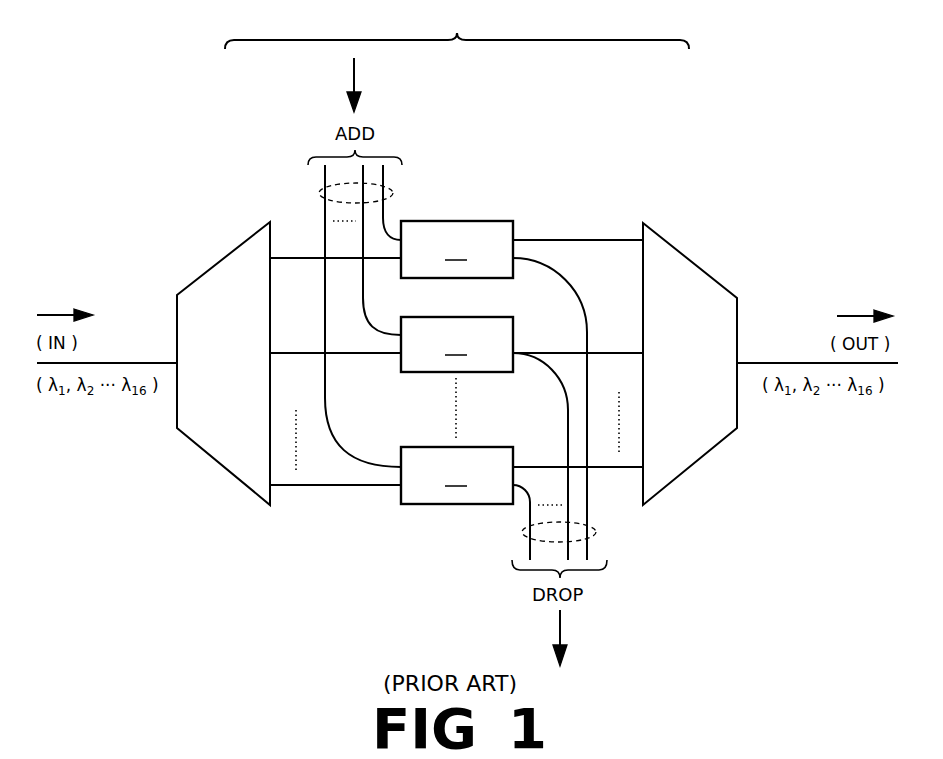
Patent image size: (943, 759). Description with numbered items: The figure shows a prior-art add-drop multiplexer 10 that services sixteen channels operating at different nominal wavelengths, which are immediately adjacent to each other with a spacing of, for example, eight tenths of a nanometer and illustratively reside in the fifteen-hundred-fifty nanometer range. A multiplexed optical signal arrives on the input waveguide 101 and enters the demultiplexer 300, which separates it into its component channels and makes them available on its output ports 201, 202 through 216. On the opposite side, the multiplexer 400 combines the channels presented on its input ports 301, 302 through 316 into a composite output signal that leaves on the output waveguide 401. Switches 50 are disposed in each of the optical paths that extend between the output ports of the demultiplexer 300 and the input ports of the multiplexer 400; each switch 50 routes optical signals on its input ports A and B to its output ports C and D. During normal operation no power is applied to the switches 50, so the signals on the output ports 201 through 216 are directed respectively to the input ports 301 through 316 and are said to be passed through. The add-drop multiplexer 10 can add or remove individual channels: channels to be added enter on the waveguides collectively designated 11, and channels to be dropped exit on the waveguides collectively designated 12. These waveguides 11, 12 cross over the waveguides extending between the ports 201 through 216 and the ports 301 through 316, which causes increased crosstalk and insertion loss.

The add-drop multiplexer 10 is at (457, 28).
The add waveguides 11 is at (320, 188).
The drop waveguides 12 is at (598, 538).
The switch 50 is at (457, 362).
The input waveguide 101 is at (170, 362).
The output port 201 is at (275, 262).
The output port 202 is at (275, 357).
The output port 216 is at (275, 489).
The demultiplexer 300 is at (225, 257).
The input port 301 is at (638, 244).
The input port 302 is at (638, 340).
The input port 316 is at (638, 471).
The multiplexer 400 is at (690, 257).
The output waveguide 401 is at (750, 362).